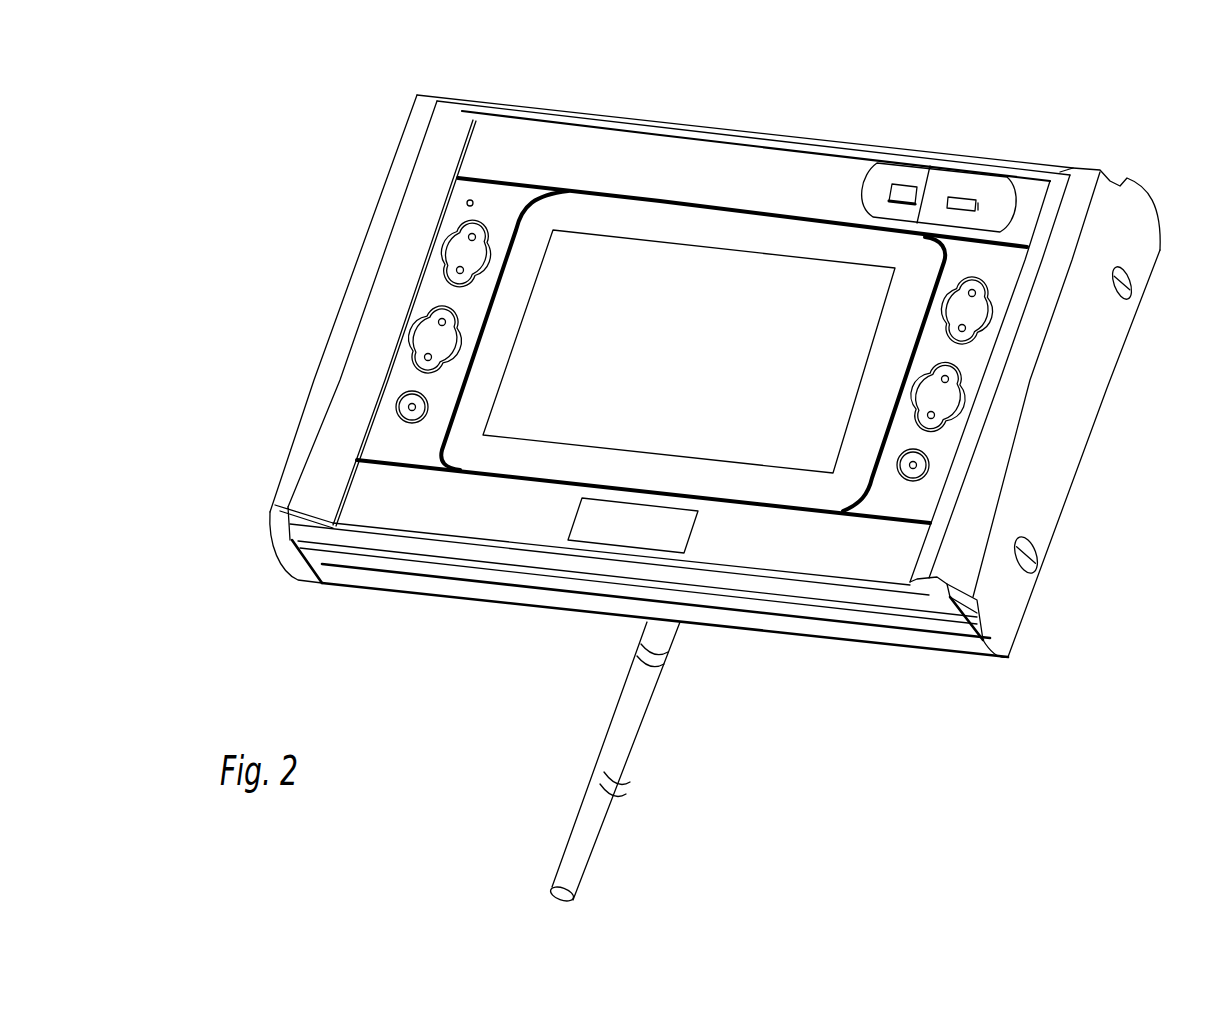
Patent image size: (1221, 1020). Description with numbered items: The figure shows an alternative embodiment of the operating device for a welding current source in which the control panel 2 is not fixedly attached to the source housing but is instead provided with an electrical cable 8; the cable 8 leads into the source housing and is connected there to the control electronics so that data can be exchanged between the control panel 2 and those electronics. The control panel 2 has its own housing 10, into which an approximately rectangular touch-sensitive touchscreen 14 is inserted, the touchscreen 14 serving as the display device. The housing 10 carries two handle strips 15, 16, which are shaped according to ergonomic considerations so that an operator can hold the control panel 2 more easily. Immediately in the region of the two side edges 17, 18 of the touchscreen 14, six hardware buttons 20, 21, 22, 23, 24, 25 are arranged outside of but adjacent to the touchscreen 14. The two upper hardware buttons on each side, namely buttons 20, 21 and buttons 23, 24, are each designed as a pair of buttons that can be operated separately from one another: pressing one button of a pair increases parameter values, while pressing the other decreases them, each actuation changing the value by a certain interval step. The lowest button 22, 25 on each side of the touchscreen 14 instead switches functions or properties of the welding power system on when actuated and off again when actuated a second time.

The control panel 2 is at (226, 370).
The electrical cable 8 is at (626, 744).
The housing 10 is at (903, 620).
The touchscreen 14 is at (718, 266).
The handle strip 15 is at (1110, 215).
The handle strip 16 is at (288, 478).
The side edge 17 is at (890, 310).
The side edge 18 is at (548, 297).
The hardware button 20 is at (457, 243).
The hardware button 21 is at (430, 330).
The hardware button 22 is at (397, 406).
The hardware button 23 is at (986, 302).
The hardware button 24 is at (958, 392).
The hardware button 25 is at (930, 463).